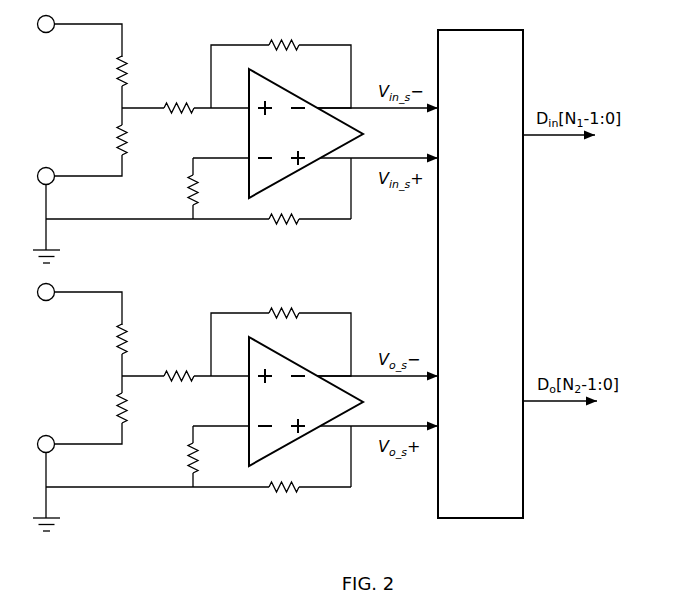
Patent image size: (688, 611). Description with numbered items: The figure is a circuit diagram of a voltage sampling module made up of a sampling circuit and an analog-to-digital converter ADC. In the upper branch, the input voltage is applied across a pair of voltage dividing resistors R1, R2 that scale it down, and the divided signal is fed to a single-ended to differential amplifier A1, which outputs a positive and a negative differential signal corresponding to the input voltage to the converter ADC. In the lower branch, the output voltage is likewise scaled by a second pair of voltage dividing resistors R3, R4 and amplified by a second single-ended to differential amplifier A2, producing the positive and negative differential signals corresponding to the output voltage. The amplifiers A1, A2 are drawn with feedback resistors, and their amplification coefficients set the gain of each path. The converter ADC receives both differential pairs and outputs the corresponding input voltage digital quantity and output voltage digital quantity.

The voltage dividing resistor R1 is at (136, 71).
The voltage dividing resistor R2 is at (136, 140).
The voltage dividing resistor R3 is at (136, 339).
The voltage dividing resistor R4 is at (136, 408).
The single-ended to differential amplifier A1 is at (306, 133).
The single-ended to differential amplifier A2 is at (306, 401).
The analog-to-digital converter ADC is at (480, 274).